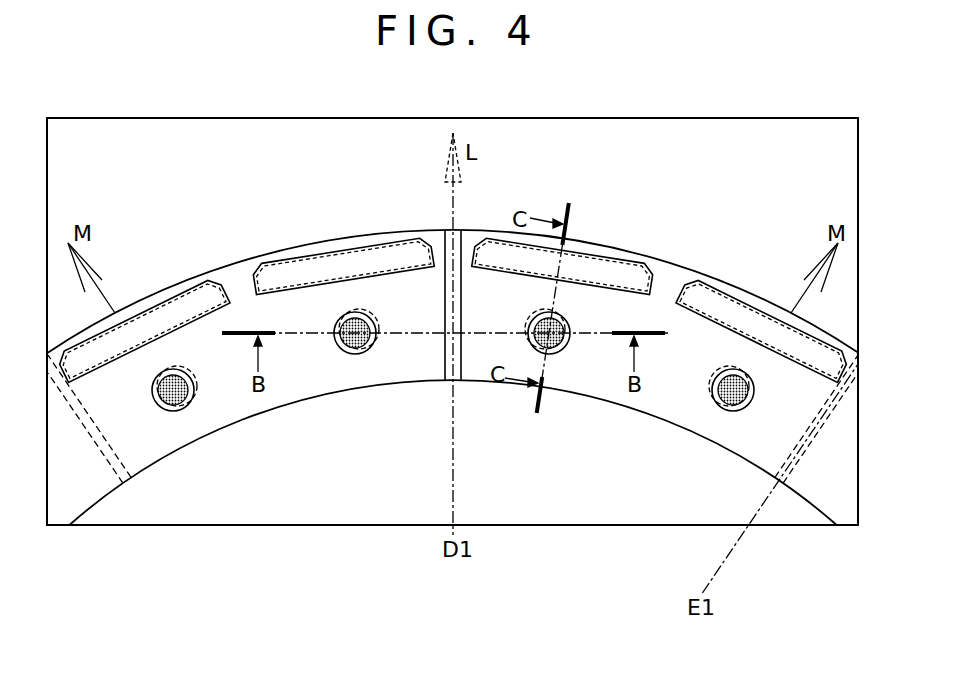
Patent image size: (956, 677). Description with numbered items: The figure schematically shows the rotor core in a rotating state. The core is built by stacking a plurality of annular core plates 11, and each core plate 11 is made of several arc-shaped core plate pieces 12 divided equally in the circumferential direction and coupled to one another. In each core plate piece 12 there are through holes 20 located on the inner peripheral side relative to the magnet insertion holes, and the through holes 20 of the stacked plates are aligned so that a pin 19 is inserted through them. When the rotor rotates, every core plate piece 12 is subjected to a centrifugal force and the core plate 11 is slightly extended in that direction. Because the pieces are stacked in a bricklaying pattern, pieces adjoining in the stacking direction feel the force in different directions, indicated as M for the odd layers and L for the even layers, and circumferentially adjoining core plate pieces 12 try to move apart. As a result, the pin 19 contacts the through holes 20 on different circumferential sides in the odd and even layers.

The core plate 11 is at (610, 247).
The core plate piece 12 is at (240, 277).
The pin 19 is at (194, 375).
The through hole 20 is at (152, 389).